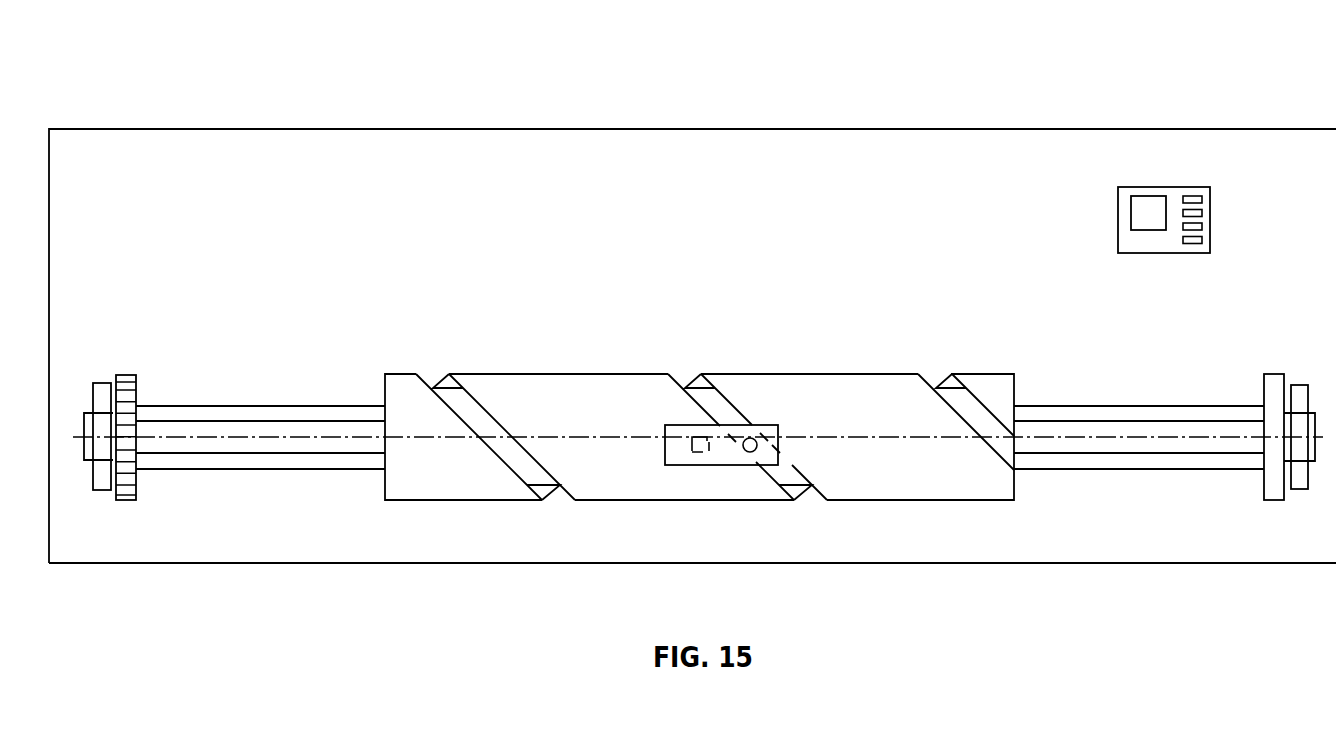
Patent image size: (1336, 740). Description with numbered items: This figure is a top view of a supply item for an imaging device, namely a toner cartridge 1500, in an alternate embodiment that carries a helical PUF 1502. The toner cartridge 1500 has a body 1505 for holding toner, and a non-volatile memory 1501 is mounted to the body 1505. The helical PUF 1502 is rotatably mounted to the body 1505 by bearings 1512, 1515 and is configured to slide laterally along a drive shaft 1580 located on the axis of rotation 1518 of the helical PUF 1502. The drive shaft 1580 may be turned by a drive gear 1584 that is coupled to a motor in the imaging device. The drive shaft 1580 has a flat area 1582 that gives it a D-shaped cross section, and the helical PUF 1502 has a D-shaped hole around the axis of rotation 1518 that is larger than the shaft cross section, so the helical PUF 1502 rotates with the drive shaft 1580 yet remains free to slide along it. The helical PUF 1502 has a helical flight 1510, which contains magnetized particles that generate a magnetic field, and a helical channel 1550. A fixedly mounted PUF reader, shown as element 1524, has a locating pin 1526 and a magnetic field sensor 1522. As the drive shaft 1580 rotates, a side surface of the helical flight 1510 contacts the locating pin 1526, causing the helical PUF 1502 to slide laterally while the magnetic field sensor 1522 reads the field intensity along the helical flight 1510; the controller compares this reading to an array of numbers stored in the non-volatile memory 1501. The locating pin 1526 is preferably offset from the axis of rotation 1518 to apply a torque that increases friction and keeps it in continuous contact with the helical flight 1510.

The toner cartridge 1500 is at (158, 70).
The body 1505 is at (397, 129).
The non-volatile memory 1501 is at (1160, 197).
The helical PUF 1502 is at (808, 304).
The helical flight 1510 is at (513, 374).
The helical channel 1550 is at (687, 360).
The carriage 1524 is at (667, 424).
The magnetic field sensor 1522 is at (692, 445).
The locating pin 1526 is at (757, 451).
The axis of rotation 1518 is at (245, 437).
The drive shaft 1580 is at (247, 470).
The flat area 1582 is at (338, 453).
The bearing 1512 is at (105, 382).
The drive gear 1584 is at (128, 373).
The bearing 1515 is at (1303, 385).